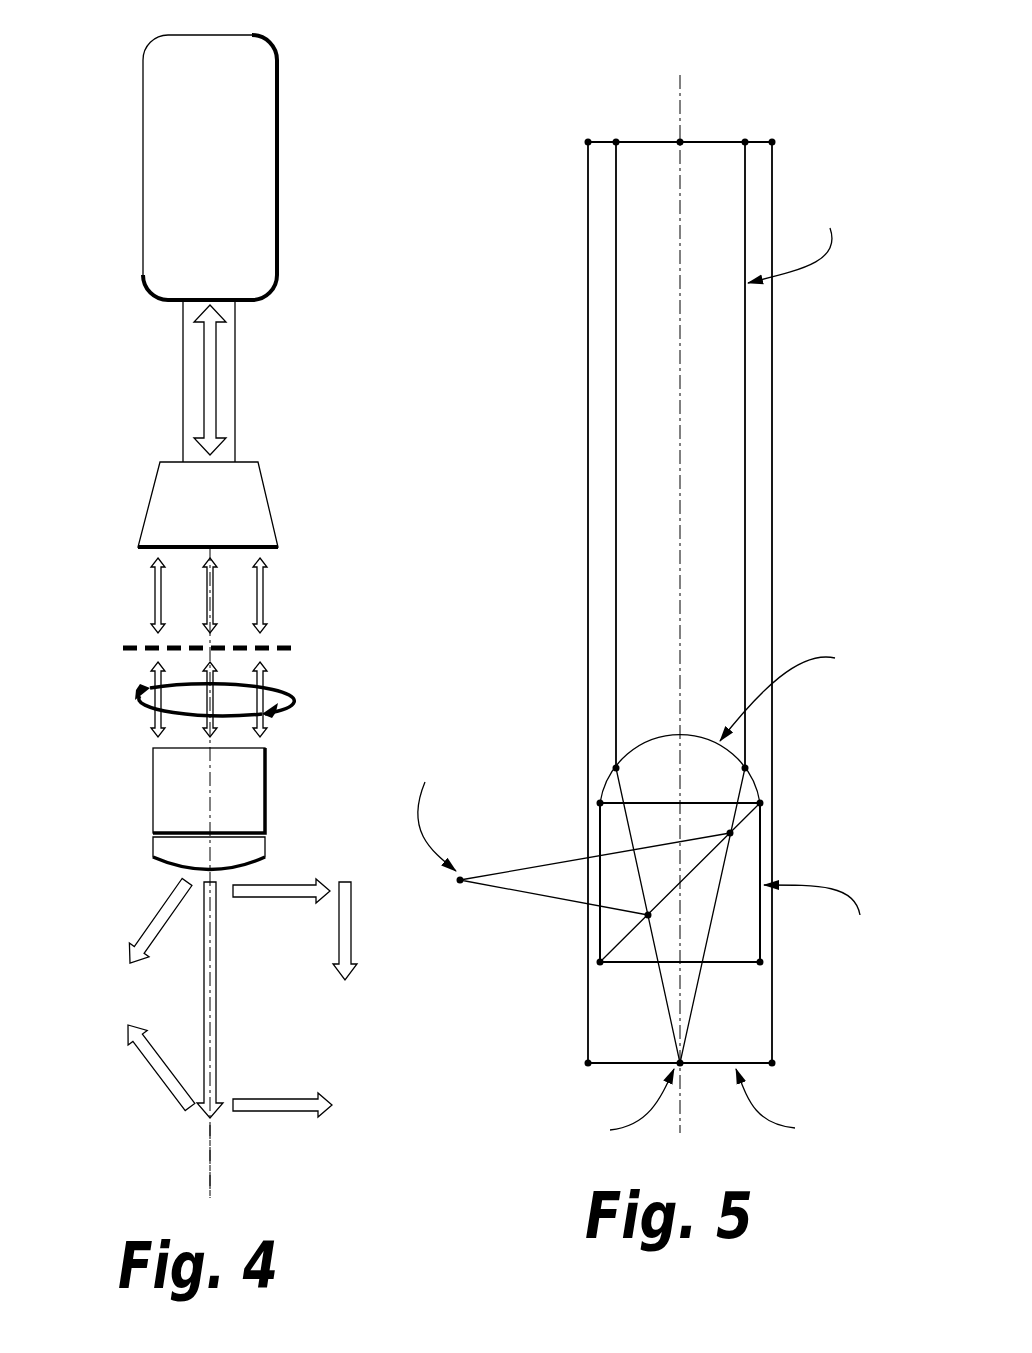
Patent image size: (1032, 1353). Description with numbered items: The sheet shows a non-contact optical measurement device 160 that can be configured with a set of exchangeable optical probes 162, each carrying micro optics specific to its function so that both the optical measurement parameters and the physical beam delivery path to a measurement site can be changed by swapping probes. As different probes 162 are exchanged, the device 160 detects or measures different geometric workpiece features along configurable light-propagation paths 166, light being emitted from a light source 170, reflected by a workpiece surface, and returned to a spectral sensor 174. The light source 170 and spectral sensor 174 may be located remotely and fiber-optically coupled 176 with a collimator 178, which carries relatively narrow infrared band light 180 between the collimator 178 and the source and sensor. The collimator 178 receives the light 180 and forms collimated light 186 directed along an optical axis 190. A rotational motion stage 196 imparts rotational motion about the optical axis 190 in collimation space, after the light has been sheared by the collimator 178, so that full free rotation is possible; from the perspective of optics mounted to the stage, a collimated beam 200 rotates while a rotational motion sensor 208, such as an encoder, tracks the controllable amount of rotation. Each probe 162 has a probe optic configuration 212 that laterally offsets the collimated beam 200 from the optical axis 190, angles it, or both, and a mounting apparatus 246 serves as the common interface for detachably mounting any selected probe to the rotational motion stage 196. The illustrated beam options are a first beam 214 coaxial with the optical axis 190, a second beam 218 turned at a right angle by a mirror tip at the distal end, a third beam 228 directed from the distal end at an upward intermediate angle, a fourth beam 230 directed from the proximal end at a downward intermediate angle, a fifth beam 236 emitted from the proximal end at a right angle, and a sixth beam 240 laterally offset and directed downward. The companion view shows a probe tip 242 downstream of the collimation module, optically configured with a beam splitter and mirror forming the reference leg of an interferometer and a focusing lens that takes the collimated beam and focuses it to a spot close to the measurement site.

In FIG. 4, the non-contact optical measurement device 160 is at (323, 86).
In FIG. 4, the exchangeable optical probes 162 is at (140, 807).
In FIG. 4, the configurable light-propagation paths 166 is at (186, 1126).
In FIG. 4, the light source 170 is at (200, 222).
In FIG. 4, the spectral sensor 174 is at (202, 114).
In FIG. 4, the fiber-optic coupling 176 is at (183, 410).
In FIG. 4, the collimator 178 is at (242, 503).
In FIG. 4, the light 180 is at (218, 378).
In FIG. 4, the collimated light 186 is at (268, 591).
In FIG. 4, the optical axis 190 is at (212, 1178).
In FIG. 4, the rotational motion stage 196 is at (290, 647).
In FIG. 4, the collimated beam 200 is at (268, 688).
In FIG. 4, the rotational motion sensor 208 is at (292, 712).
In FIG. 4, the probe optic configuration 212 is at (158, 868).
In FIG. 4, the first beam 214 is at (218, 1011).
In FIG. 4, the second beam 218 is at (280, 1098).
In FIG. 4, the third beam 228 is at (150, 1068).
In FIG. 4, the fourth beam 230 is at (156, 924).
In FIG. 4, the fifth beam 236 is at (270, 898).
In FIG. 4, the sixth beam 240 is at (352, 928).
In FIG. 5, the probe tip 242 is at (828, 465).
In FIG. 4, the mounting apparatus 246 is at (153, 752).